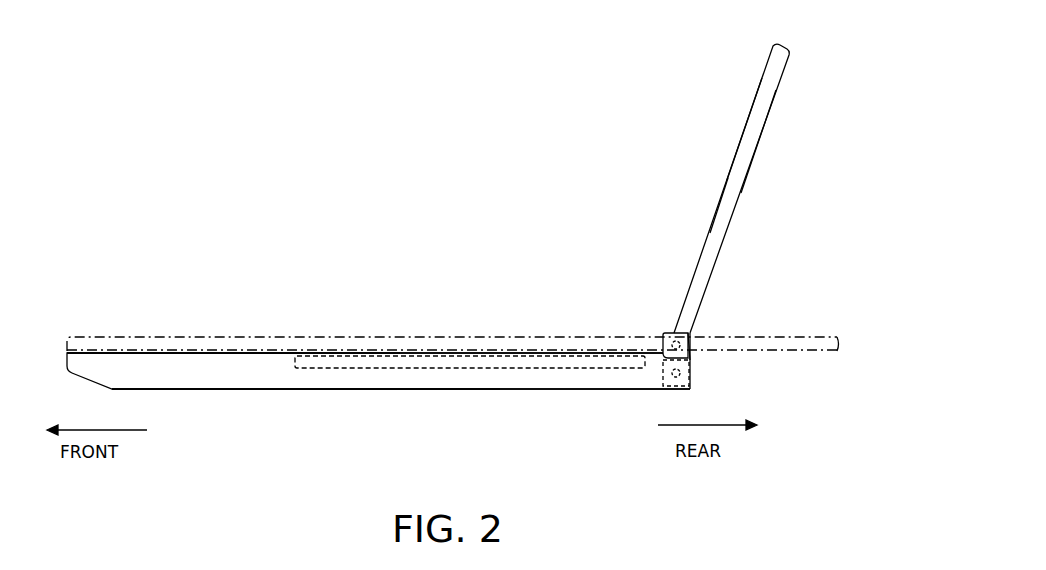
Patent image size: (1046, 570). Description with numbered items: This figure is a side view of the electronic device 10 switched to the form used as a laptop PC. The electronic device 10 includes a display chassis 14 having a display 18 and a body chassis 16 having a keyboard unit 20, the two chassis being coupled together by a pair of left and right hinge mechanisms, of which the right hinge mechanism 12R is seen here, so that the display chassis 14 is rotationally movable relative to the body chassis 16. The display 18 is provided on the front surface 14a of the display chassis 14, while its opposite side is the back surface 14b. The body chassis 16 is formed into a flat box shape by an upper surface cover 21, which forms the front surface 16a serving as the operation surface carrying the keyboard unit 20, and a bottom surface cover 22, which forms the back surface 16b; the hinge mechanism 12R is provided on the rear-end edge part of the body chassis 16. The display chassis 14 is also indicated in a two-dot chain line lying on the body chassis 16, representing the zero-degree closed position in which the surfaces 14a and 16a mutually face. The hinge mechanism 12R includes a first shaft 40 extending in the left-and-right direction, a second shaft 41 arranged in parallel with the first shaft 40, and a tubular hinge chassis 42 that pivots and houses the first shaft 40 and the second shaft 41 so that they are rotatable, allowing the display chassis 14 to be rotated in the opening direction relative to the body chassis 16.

The electronic device 10 is at (296, 154).
The hinge mechanism 12R is at (691, 386).
The display chassis 14 is at (718, 108).
The front surface of display chassis 14a is at (728, 180).
The back surface of display chassis 14b is at (741, 193).
The body chassis 16 is at (304, 273).
The front surface of body chassis 16a is at (186, 352).
The back surface of body chassis 16b is at (324, 391).
The display 18 is at (710, 233).
The keyboard unit 20 is at (447, 369).
The upper surface cover 21 is at (240, 352).
The bottom surface cover 22 is at (274, 399).
The first shaft 40 is at (667, 333).
The second shaft 41 is at (662, 388).
The hinge chassis 42 is at (693, 338).